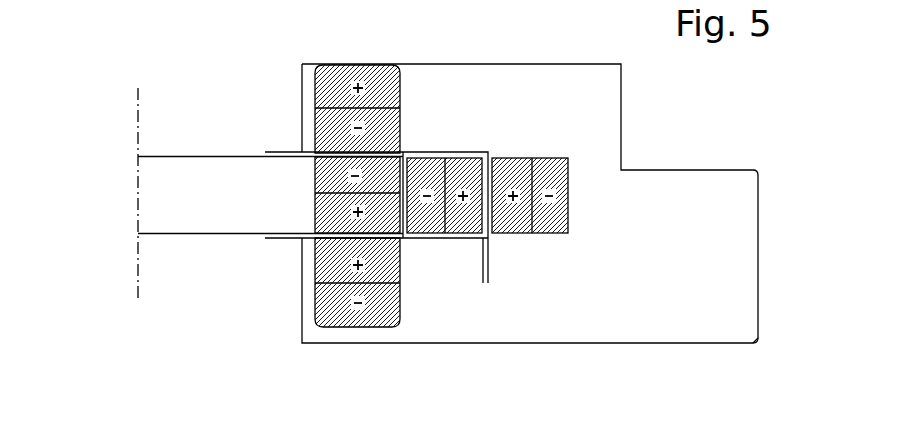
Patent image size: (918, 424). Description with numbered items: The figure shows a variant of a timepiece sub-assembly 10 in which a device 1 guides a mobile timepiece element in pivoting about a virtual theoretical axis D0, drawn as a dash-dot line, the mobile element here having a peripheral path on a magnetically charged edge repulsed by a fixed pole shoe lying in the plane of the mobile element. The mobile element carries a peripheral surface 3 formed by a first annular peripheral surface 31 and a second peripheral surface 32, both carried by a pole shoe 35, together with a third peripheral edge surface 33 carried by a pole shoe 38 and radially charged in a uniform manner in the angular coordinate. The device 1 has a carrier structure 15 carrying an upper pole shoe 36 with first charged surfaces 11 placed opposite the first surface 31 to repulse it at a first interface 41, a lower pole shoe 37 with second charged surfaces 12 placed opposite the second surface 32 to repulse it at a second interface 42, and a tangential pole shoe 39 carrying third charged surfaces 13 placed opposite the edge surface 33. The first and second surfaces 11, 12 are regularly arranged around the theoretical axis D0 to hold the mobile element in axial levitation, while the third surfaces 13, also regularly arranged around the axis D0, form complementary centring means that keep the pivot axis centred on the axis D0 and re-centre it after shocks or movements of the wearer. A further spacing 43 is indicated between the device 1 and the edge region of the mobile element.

The device for guiding pivoting 1 is at (672, 132).
The peripheral surface 3 is at (268, 87).
The timepiece sub-assembly 10 is at (150, 72).
The first magnetically or electrically charged surfaces 11 is at (326, 204).
The second magnetically or electrically charged surfaces 12 is at (467, 132).
The third magnetically or electrically charged surfaces 13 is at (546, 267).
The carrier structure 15 is at (731, 315).
The first annular peripheral surface 31 is at (357, 92).
The second peripheral surface 32 is at (357, 307).
The third peripheral edge surface 33 is at (491, 164).
The pole shoe 35 is at (357, 203).
The upper pole shoe 36 is at (360, 108).
The lower pole shoe 37 is at (358, 288).
The pole shoe for edge surface 38 is at (446, 192).
The tangential pole shoe 39 is at (533, 197).
The first interface 41 is at (274, 180).
The second interface 42 is at (274, 210).
The third gap distance 43 is at (516, 272).
The theoretical axis D0 is at (144, 288).